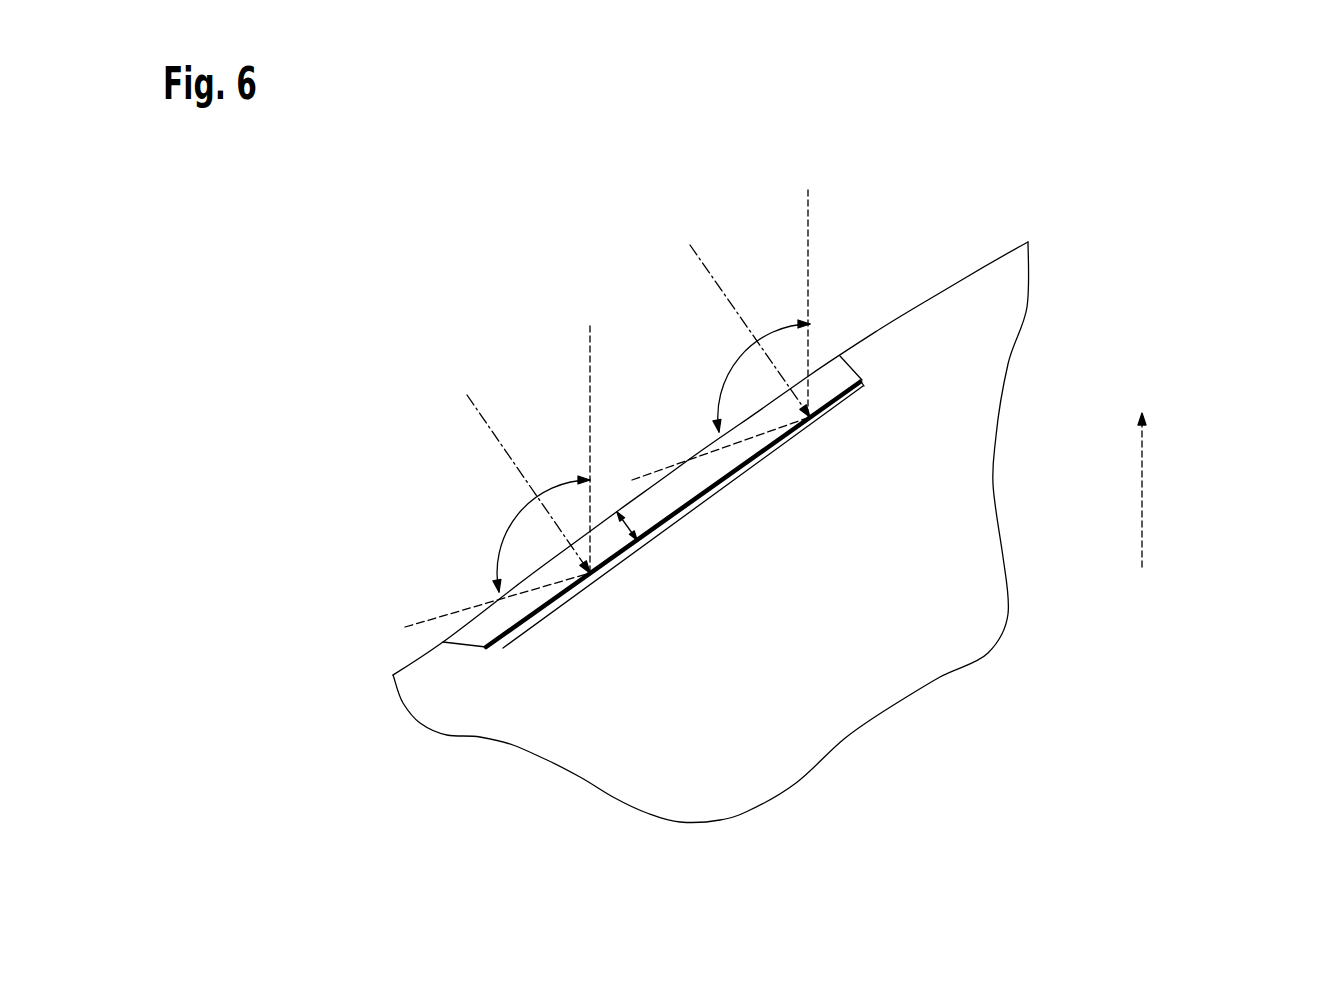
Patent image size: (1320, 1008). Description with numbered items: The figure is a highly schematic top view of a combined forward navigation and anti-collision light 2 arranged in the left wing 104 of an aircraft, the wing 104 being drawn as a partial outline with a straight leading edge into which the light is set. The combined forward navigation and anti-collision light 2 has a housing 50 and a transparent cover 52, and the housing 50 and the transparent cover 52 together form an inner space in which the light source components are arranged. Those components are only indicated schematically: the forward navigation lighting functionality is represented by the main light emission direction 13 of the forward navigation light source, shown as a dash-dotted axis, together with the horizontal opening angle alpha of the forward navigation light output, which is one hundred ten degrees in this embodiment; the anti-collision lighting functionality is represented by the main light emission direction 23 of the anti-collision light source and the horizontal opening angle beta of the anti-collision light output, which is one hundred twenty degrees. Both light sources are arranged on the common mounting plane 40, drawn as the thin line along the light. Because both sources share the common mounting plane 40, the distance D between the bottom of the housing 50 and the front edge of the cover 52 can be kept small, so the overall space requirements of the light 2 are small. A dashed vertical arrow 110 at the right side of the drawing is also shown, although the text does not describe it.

The combined forward navigation and anti-collision light 2 is at (597, 418).
The main light emission direction of the forward navigation light source 13 is at (490, 427).
The main light emission direction of the anti-collision light source 23 is at (708, 270).
The common mounting plane 40 is at (743, 470).
The housing 50 is at (707, 500).
The transparent cover 52 is at (646, 505).
The left wing 104 is at (547, 725).
The reference direction 110 is at (1145, 495).
The distance D is at (628, 530).